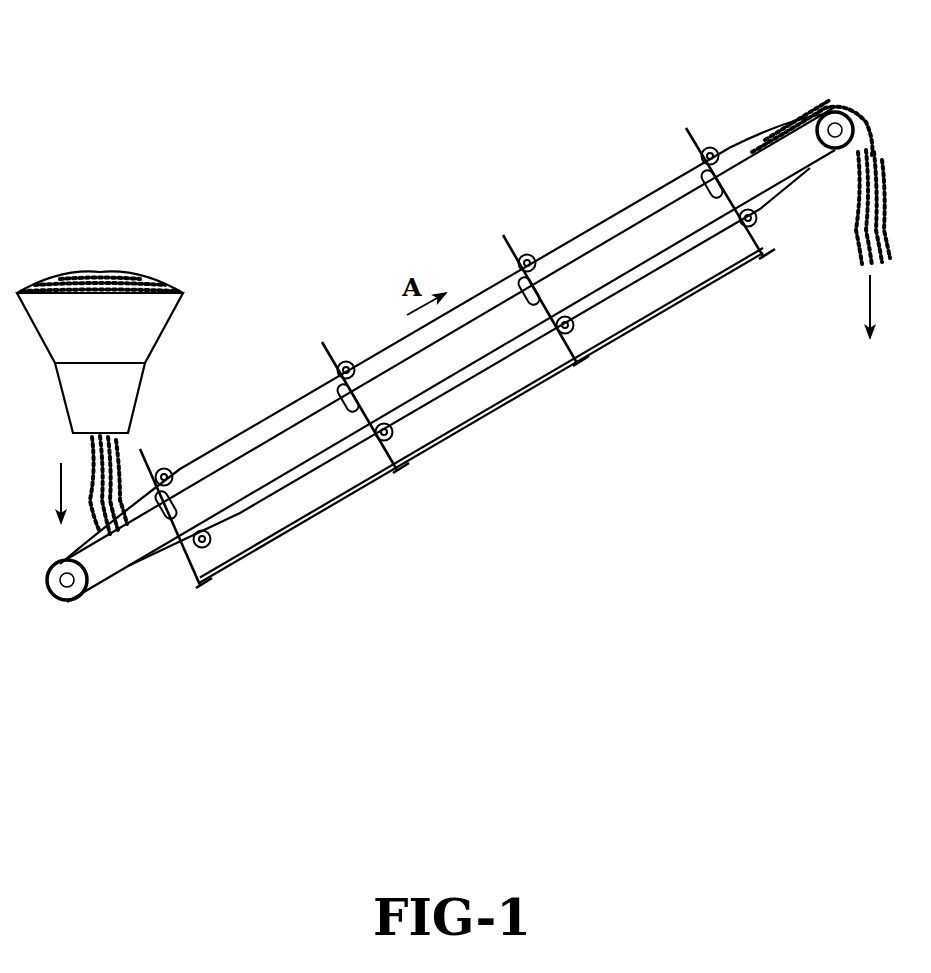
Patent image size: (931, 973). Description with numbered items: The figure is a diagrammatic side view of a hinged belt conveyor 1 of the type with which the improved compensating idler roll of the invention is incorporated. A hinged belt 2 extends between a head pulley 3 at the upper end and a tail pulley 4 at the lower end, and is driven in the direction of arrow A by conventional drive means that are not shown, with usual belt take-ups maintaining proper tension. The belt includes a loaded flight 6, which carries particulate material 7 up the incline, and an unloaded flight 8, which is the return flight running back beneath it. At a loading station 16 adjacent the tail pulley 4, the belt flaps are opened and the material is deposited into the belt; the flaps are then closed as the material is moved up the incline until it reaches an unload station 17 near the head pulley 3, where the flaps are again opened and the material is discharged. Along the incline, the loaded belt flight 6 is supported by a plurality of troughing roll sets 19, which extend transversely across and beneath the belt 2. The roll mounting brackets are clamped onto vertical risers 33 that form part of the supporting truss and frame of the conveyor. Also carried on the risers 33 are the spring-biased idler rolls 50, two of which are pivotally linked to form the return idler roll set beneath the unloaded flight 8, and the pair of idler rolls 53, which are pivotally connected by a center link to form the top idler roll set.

The hinged belt conveyor 1 is at (462, 241).
The hinged belt 2 is at (270, 411).
The head pulley 3 is at (833, 118).
The tail pulley 4 is at (70, 593).
The loaded flight 6 is at (589, 226).
The particulate material 7 is at (110, 273).
The unloaded flight 8 is at (472, 384).
The loading station 16 is at (129, 461).
The unload station 17 is at (841, 190).
The troughing roll sets 19 is at (341, 410).
The vertical risers 33 is at (565, 352).
The idler roll 50 is at (388, 437).
The idler rolls 53 is at (342, 360).